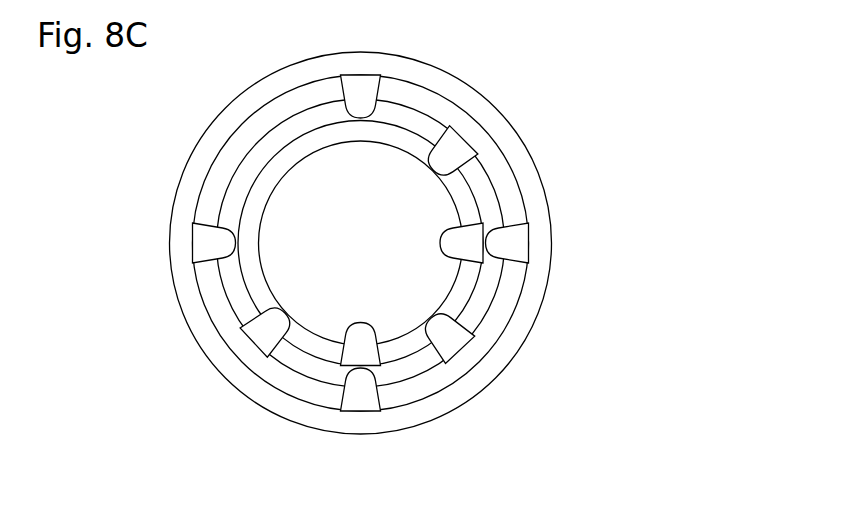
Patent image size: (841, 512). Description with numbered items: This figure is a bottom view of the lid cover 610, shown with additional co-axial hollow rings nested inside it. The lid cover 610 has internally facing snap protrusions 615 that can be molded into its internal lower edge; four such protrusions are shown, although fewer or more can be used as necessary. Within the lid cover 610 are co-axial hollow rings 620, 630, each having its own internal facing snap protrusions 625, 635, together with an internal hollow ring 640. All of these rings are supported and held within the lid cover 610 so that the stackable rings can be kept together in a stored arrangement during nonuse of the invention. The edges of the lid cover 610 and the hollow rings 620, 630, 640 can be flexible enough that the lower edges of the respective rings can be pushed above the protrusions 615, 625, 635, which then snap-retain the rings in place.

The lid cover 610 is at (533, 150).
The snap protrusions 615 is at (381, 92).
The co-axial hollow ring 620 is at (498, 193).
The snap protrusions 625 is at (253, 318).
The co-axial hollow ring 630 is at (310, 357).
The snap protrusions 635 is at (378, 355).
The internal hollow ring 640 is at (450, 287).